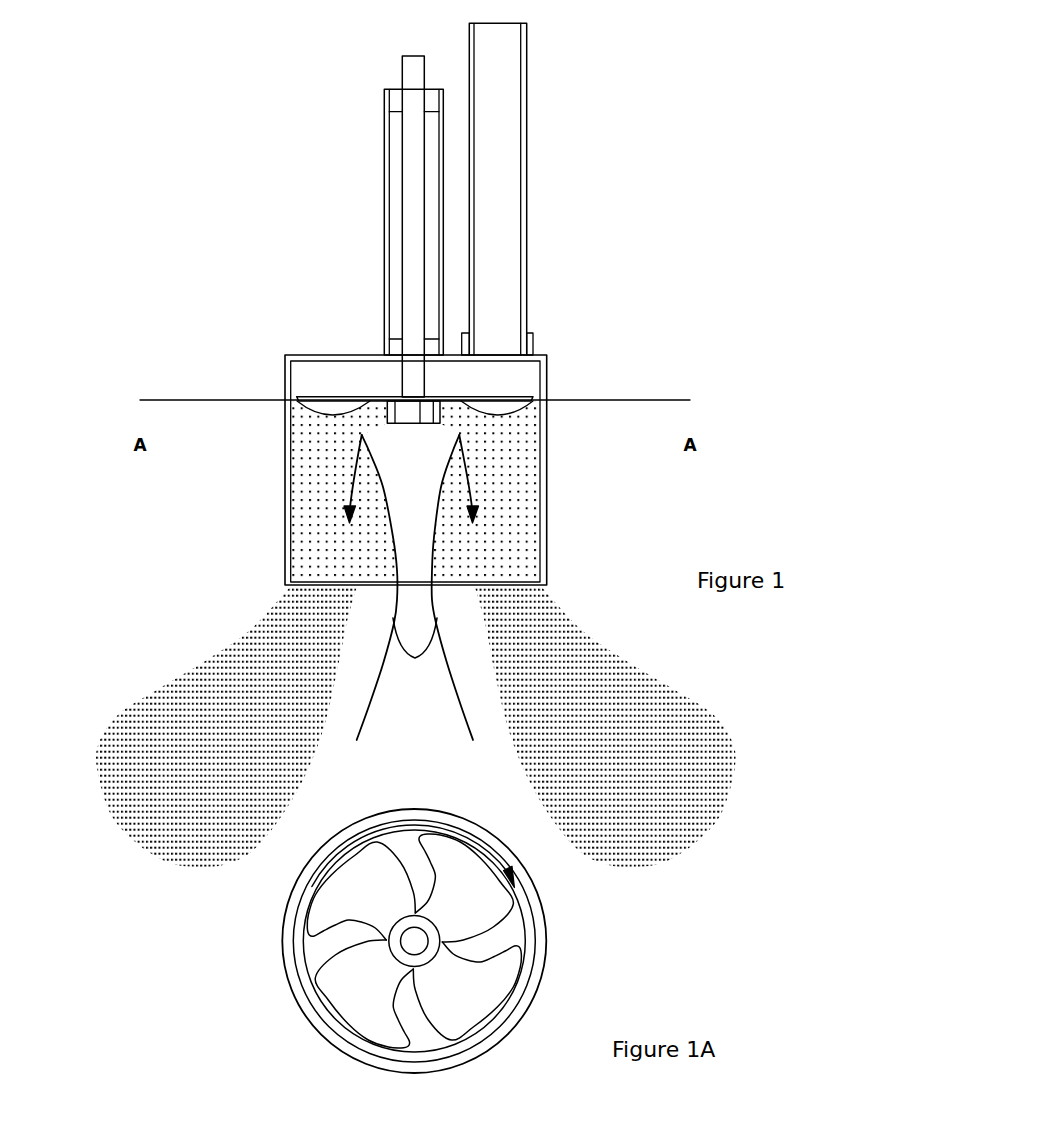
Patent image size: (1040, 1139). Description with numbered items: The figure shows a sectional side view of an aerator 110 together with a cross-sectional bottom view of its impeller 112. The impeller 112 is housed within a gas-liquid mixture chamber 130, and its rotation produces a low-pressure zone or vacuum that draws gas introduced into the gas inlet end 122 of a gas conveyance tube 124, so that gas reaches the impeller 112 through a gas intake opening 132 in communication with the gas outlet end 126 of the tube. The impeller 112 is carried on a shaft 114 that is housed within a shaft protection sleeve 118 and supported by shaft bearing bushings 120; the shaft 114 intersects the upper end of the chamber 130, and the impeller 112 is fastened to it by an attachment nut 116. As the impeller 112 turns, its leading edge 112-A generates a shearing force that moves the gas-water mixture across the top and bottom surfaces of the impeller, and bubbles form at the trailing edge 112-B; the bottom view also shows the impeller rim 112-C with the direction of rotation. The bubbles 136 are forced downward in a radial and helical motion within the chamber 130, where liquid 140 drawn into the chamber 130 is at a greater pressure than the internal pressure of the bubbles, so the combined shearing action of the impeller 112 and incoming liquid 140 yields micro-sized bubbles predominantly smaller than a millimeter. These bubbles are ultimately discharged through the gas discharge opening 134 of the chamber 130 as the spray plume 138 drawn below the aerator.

In FIG. 1, the aerator 110 is at (648, 271).
In FIG. 1, the impeller 112 is at (347, 396).
In FIG. 1A, the impeller 112 is at (403, 917).
In FIG. 1A, the leading edge of impeller 112-A is at (332, 951).
In FIG. 1A, the trailing edge of impeller 112-B is at (385, 998).
In FIG. 1A, the impeller rim 112-C is at (417, 825).
In FIG. 1, the shaft 114 is at (412, 237).
In FIG. 1, the attachment nut 116 is at (387, 421).
In FIG. 1, the shaft protection sleeve 118 is at (385, 275).
In FIG. 1, the shaft bearing bushings 120 is at (392, 100).
In FIG. 1, the gas inlet end 122 is at (527, 39).
In FIG. 1, the gas conveyance tube 124 is at (527, 228).
In FIG. 1, the gas outlet end 126 is at (498, 325).
In FIG. 1, the gas-liquid mixture chamber 130 is at (548, 480).
In FIG. 1A, the gas-liquid mixture chamber 130 is at (527, 1007).
In FIG. 1, the gas intake opening 132 is at (500, 362).
In FIG. 1, the gas discharge opening 134 is at (470, 585).
In FIG. 1, the bubbles 136 is at (310, 511).
In FIG. 1, the spray plume 138 is at (270, 677).
In FIG. 1, the liquid 140 is at (415, 653).